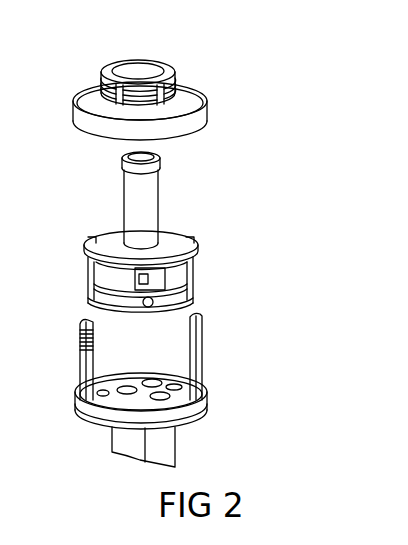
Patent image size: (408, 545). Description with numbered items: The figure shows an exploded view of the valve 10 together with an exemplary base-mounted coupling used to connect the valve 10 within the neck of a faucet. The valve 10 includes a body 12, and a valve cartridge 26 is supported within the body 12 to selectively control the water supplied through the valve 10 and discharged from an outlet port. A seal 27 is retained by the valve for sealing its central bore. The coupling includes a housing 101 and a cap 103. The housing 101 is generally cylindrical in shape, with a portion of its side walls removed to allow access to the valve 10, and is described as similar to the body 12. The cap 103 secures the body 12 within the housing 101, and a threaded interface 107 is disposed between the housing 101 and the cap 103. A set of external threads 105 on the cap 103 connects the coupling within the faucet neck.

The valve 10 is at (162, 198).
The body 12 is at (84, 284).
The valve cartridge 26 is at (178, 273).
The seal 27 is at (161, 167).
The housing 101 is at (77, 352).
The cap 103 is at (208, 106).
The external threads 105 is at (175, 77).
The threaded interface 107 is at (80, 332).